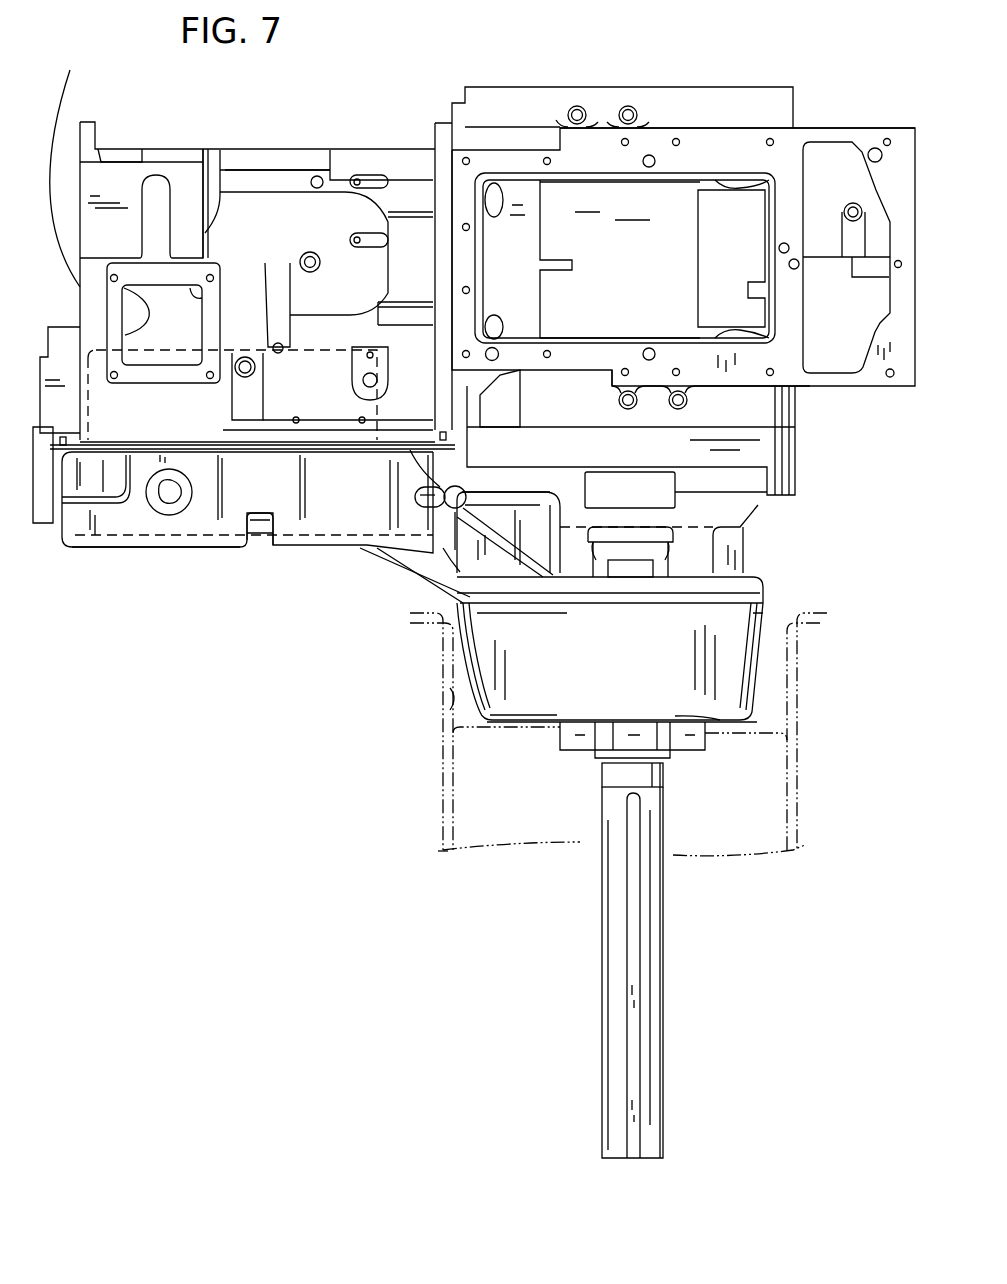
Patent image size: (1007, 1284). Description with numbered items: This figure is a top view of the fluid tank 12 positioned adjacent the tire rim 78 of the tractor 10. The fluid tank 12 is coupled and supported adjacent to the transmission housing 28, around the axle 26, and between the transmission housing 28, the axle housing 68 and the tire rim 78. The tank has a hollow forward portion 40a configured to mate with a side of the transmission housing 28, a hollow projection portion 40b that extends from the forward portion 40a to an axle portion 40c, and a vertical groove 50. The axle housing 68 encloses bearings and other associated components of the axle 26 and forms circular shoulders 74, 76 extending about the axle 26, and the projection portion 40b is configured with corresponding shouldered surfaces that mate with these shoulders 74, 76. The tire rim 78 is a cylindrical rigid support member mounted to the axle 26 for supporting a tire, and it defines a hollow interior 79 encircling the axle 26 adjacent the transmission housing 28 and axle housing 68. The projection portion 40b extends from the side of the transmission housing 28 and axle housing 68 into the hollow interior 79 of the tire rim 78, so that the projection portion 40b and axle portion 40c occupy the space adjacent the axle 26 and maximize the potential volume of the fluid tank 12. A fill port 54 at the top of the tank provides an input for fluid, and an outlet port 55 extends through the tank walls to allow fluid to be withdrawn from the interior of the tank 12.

The tractor 10 is at (777, 63).
The fluid tank 12 is at (209, 548).
The axle 26 is at (663, 1035).
The transmission housing 28 is at (68, 78).
The forward portion 40a is at (83, 548).
The projection portion 40b is at (440, 550).
The axle portion 40c is at (753, 693).
The vertical groove 50 is at (262, 547).
The fill port 54 is at (463, 510).
The outlet port 55 is at (165, 505).
The axle housing 68 is at (753, 507).
The circular shoulder 74 is at (790, 500).
The circular shoulder 76 is at (737, 525).
The tire rim 78 is at (787, 688).
The hollow interior 79 is at (443, 713).